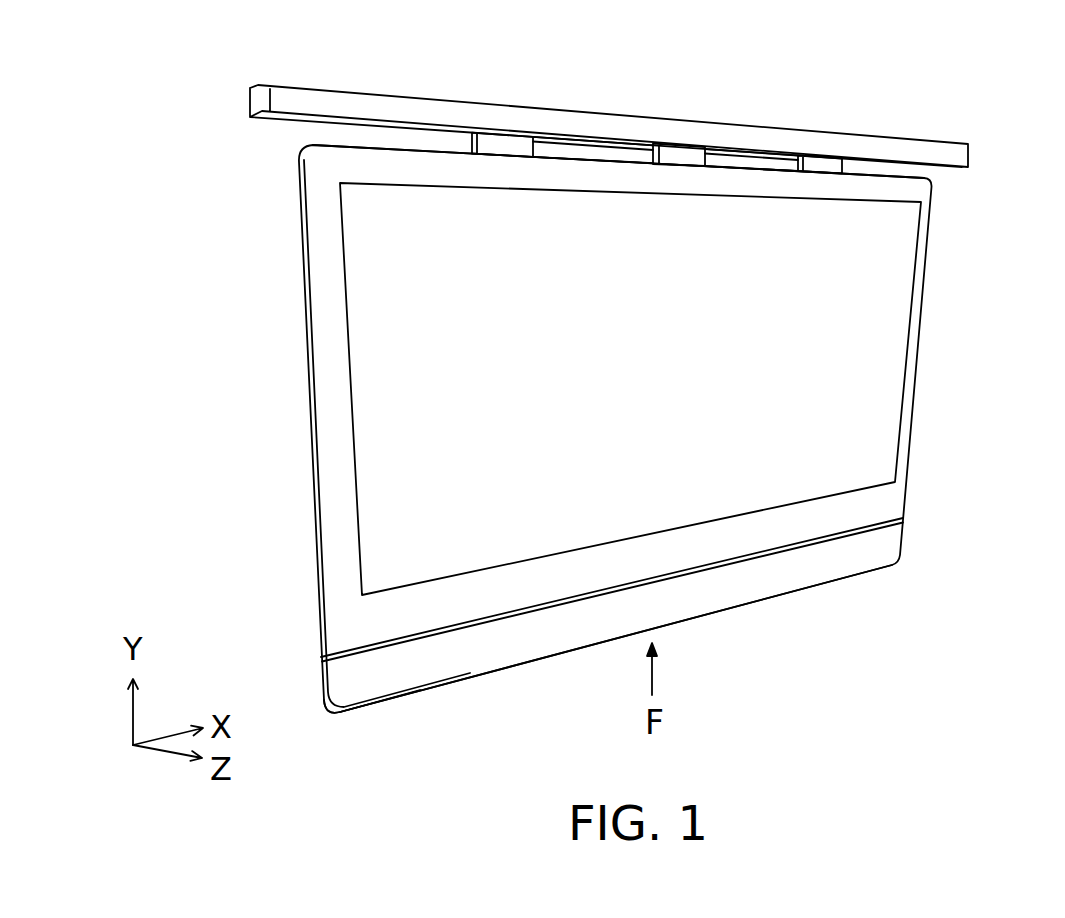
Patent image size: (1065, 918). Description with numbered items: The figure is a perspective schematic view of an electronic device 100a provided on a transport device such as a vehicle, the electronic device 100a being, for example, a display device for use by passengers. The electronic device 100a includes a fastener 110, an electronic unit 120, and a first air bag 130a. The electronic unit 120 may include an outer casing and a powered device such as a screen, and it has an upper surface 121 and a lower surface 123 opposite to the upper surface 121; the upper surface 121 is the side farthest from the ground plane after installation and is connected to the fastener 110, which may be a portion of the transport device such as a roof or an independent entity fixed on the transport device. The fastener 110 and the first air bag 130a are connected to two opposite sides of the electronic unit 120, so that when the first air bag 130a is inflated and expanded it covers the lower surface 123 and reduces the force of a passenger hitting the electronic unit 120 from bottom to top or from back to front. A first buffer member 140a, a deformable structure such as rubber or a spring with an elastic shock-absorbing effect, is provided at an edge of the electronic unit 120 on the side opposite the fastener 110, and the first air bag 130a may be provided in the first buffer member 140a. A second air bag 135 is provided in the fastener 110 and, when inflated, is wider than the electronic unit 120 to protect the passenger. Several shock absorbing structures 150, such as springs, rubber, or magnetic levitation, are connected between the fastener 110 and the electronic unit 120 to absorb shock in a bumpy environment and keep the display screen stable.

The electronic device 100a is at (651, 401).
The fastener 110 is at (950, 152).
The electronic unit 120 is at (920, 348).
The upper surface 121 is at (343, 145).
The lower surface 123 is at (370, 648).
The first air bag 130a is at (886, 540).
The second air bag 135 is at (656, 128).
The first buffer member 140a is at (750, 585).
The shock absorbing structure 150 is at (510, 142).